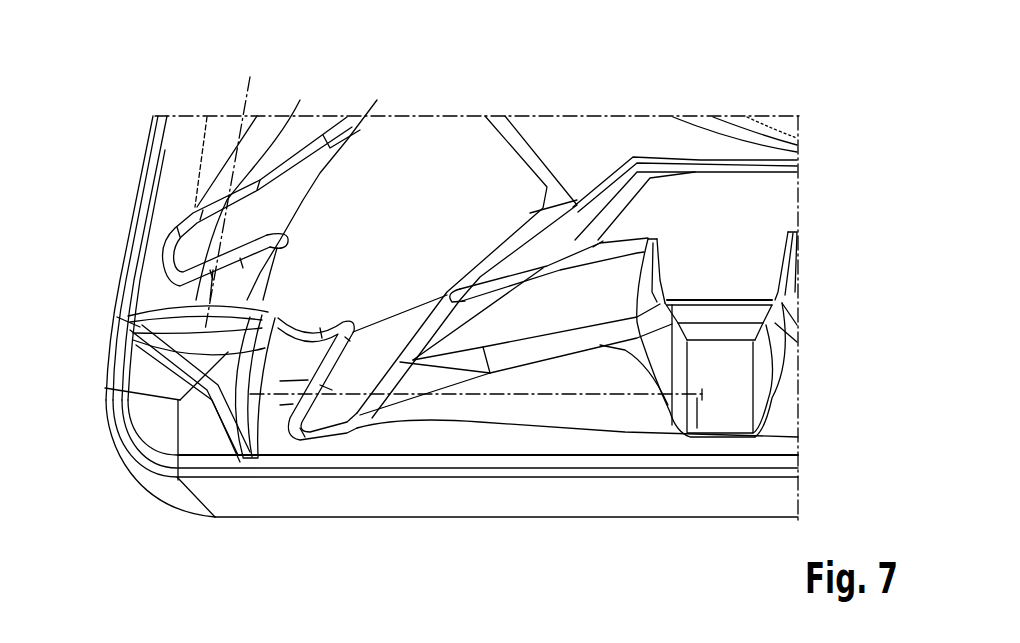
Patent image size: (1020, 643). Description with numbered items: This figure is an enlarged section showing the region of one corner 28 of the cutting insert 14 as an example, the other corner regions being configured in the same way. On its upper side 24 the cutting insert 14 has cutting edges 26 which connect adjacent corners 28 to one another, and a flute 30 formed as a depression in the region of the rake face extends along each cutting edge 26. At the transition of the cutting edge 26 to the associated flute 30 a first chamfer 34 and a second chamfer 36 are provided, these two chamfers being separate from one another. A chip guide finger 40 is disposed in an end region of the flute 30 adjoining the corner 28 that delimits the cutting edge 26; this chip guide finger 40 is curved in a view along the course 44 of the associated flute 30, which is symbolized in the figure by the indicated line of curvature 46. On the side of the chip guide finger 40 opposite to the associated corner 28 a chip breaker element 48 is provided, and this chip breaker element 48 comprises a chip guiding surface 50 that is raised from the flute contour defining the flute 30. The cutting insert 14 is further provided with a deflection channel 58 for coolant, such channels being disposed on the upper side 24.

The cutting insert 14 is at (705, 78).
The upper side 24 is at (176, 122).
The cutting edge 26 is at (597, 477).
The corner 28 is at (130, 495).
The flute 30 is at (197, 80).
The first chamfer 34 is at (770, 462).
The second chamfer 36 is at (770, 450).
The chip guide finger 40 is at (106, 334).
The course of the flute 44 is at (243, 143).
The line of curvature 46 is at (118, 313).
The chip breaker element 48 is at (293, 177).
The chip guiding surface 50 is at (347, 433).
The deflection channel 58 is at (616, 194).